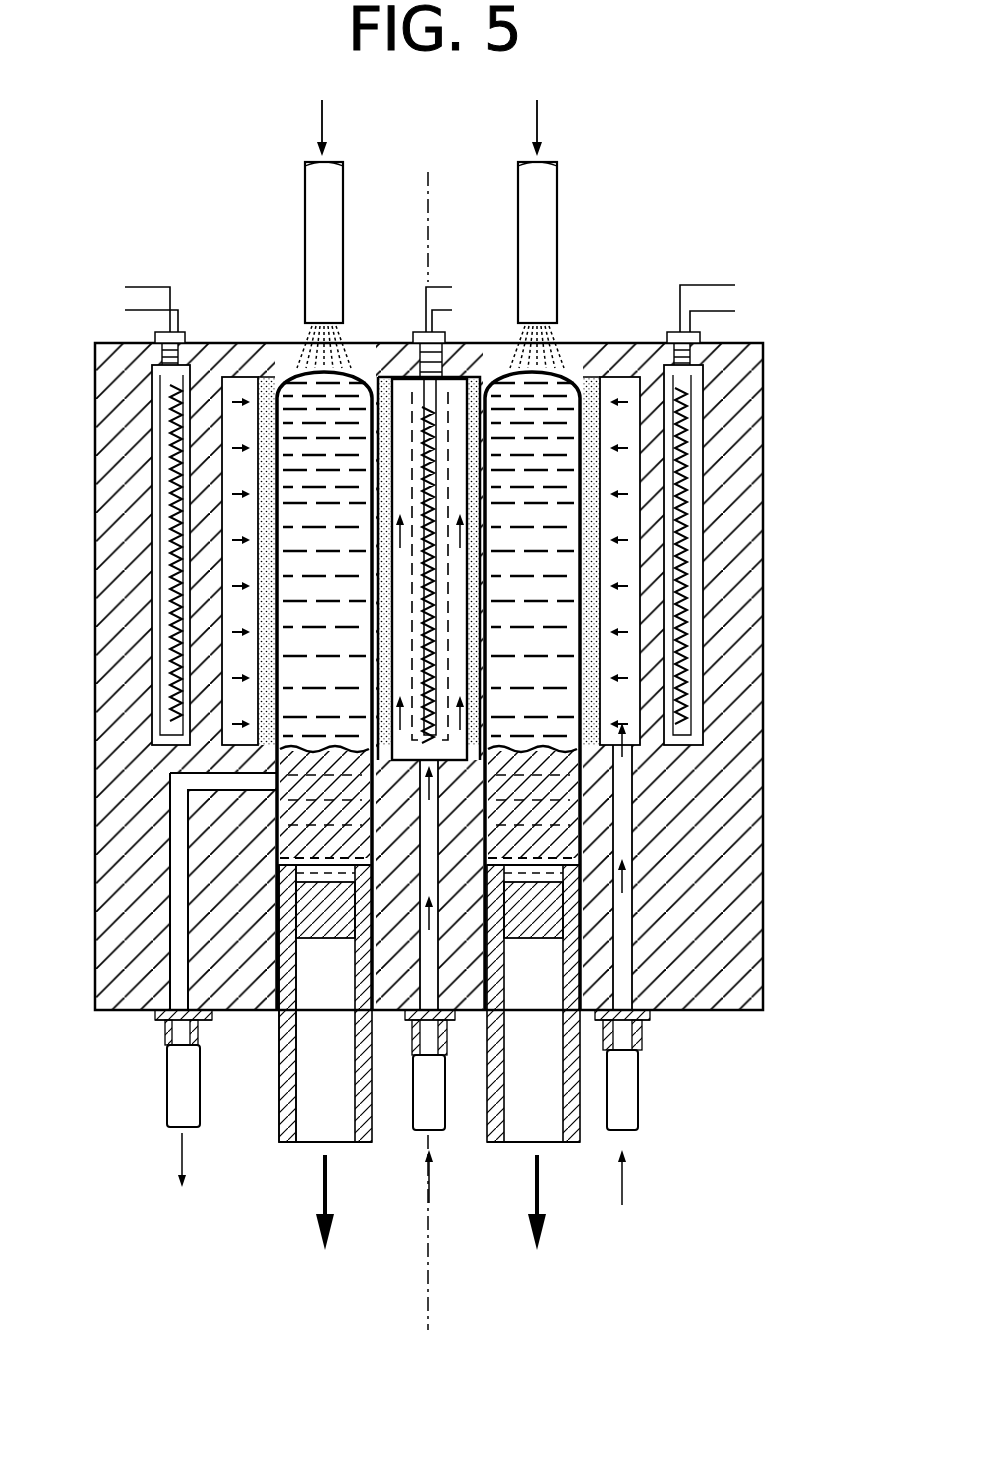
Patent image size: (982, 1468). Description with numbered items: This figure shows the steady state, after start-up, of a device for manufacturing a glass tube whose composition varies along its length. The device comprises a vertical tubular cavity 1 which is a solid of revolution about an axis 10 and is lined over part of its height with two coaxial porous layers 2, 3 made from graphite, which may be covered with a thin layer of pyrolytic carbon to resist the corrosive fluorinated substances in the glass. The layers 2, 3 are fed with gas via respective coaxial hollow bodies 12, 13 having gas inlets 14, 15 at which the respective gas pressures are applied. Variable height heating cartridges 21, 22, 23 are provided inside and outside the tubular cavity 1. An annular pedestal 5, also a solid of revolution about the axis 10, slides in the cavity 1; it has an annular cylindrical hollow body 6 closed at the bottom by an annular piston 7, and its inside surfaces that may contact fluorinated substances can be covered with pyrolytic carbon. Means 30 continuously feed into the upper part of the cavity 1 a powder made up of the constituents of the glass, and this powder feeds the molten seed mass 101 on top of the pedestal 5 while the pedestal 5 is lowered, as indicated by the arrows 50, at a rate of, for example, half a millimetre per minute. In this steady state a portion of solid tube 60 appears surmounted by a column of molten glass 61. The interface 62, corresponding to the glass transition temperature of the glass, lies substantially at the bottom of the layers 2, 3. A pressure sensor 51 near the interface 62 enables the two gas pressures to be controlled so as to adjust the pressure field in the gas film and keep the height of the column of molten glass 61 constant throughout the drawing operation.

The tubular cavity 1 is at (569, 340).
The porous layer 2 is at (268, 377).
The porous layer 3 is at (372, 378).
The annular pedestal 5 is at (297, 1142).
The annular cylindrical hollow body 6 is at (290, 1070).
The annular piston 7 is at (324, 920).
The axis 10 is at (428, 200).
The coaxial hollow body 12 is at (239, 377).
The coaxial hollow body 13 is at (456, 390).
The gas inlet 14 is at (428, 1115).
The gas inlet 15 is at (625, 1100).
The heating cartridge 21 is at (172, 558).
The heating cartridge 22 is at (690, 512).
The heating cartridge 23 is at (432, 470).
The feeding means 30 is at (322, 258).
The arrows 50 is at (327, 1198).
The pressure sensor 51 is at (178, 1082).
The solid tube 60 is at (322, 832).
The column of molten glass 61 is at (320, 565).
The interface 62 is at (345, 742).
The molten seed mass 101 is at (340, 405).